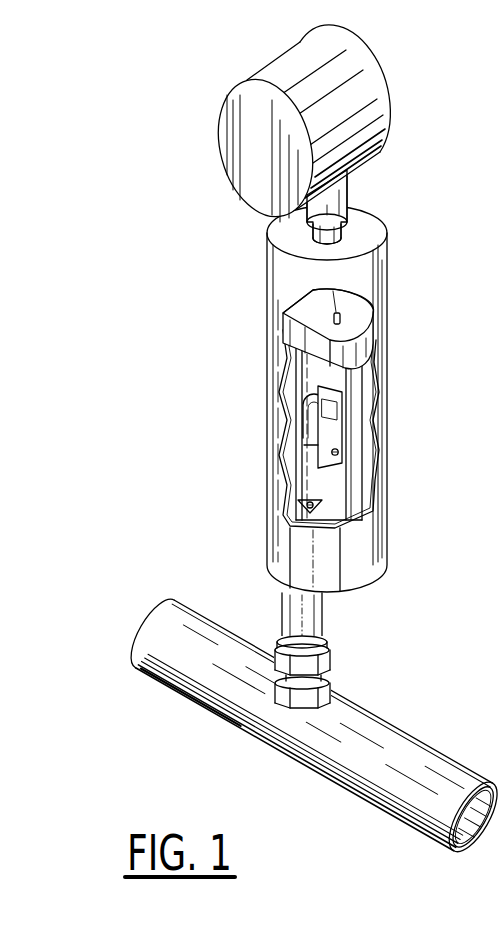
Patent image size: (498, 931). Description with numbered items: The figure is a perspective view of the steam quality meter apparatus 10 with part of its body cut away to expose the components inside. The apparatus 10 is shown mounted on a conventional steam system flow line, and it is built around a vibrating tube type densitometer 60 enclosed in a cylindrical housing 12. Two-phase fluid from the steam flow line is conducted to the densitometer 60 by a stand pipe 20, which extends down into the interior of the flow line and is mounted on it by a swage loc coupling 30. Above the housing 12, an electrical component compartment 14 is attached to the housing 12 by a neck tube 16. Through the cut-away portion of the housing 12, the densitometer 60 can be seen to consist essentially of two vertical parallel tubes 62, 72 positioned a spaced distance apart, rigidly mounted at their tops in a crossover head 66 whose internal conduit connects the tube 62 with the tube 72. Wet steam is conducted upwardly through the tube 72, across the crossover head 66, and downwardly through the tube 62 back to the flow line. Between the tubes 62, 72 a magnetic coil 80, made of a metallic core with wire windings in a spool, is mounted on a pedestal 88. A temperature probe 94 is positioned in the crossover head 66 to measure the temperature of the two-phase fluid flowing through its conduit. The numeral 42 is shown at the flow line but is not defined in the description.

The steam quality meter apparatus 10 is at (332, 399).
The cylindrical housing 12 is at (268, 348).
The electrical component compartment 14 is at (381, 107).
The neck tube 16 is at (354, 213).
The stand pipe 20 is at (322, 617).
The swage loc coupling 30 is at (330, 651).
The pipe / tubular support 42 is at (128, 615).
The vibrating tube type densitometer 60 is at (374, 383).
The vertical parallel tube 62 is at (365, 442).
The crossover head 66 is at (372, 320).
The vertical parallel tube 72 is at (300, 447).
The magnetic coil 80 is at (303, 410).
The pedestal 88 is at (348, 488).
The temperature probe 94 is at (345, 321).